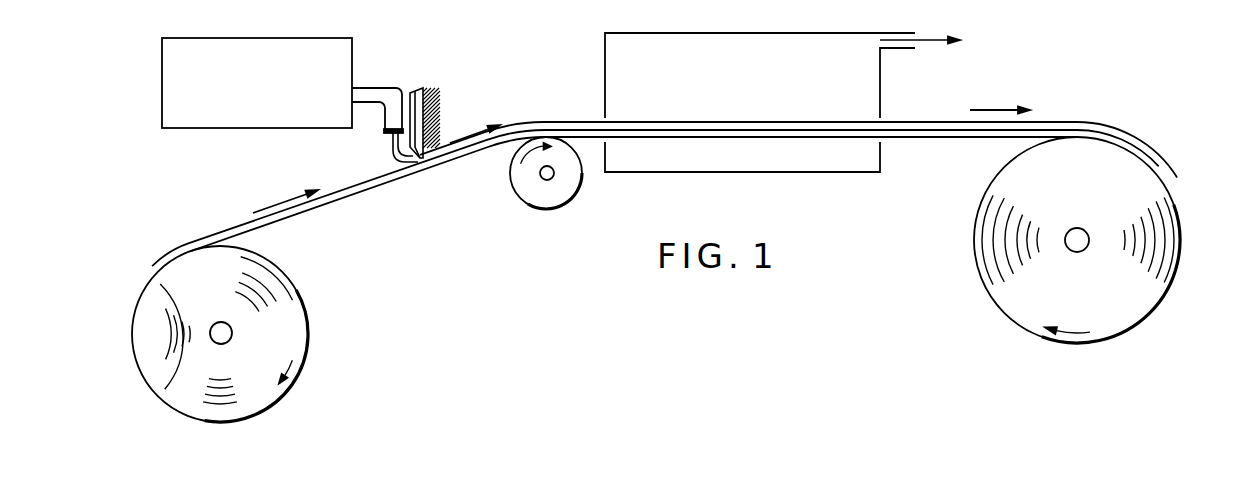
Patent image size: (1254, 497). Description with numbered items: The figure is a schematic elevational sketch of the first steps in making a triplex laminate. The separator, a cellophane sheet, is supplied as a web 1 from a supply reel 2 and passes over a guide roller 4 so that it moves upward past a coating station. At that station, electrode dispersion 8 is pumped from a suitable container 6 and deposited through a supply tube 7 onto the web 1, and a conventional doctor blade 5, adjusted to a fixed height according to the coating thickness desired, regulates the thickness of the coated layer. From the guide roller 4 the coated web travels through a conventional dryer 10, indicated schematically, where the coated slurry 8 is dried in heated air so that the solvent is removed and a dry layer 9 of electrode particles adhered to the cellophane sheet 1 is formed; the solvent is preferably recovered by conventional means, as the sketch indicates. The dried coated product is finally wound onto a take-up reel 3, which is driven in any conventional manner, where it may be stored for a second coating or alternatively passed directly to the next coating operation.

The web 1 is at (338, 203).
The supply reel 2 is at (316, 306).
The take-up reel 3 is at (993, 312).
The guide roller 4 is at (549, 210).
The doctor blade 5 is at (433, 90).
The container 6 is at (353, 70).
The supply tube 7 is at (402, 72).
The electrode dispersion 8 is at (392, 153).
The dry layer 9 is at (921, 121).
The dryer 10 is at (741, 174).